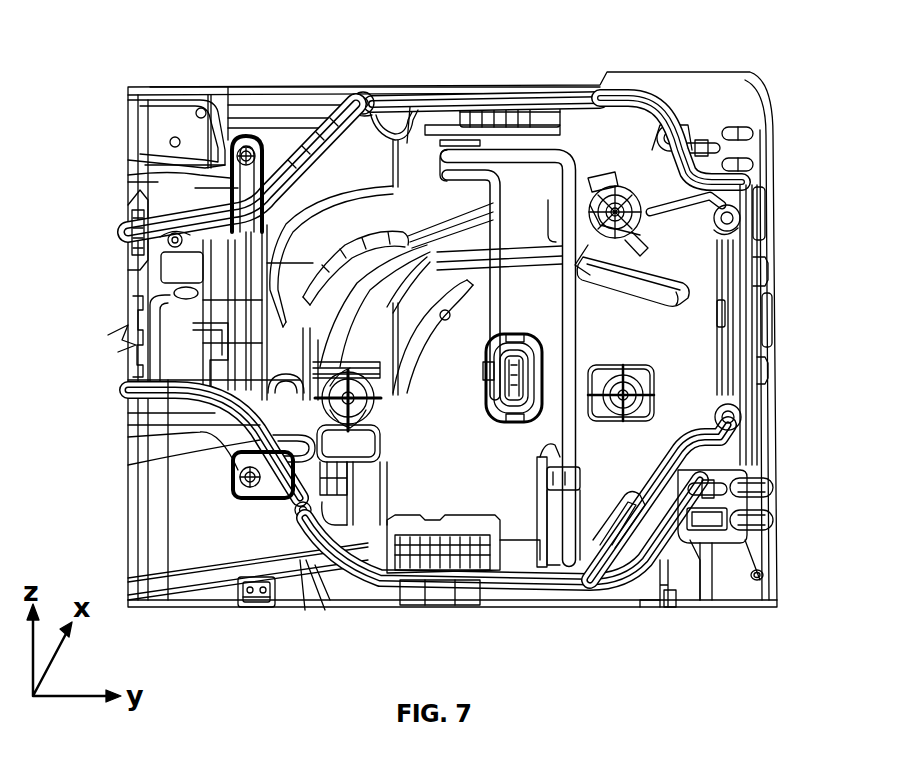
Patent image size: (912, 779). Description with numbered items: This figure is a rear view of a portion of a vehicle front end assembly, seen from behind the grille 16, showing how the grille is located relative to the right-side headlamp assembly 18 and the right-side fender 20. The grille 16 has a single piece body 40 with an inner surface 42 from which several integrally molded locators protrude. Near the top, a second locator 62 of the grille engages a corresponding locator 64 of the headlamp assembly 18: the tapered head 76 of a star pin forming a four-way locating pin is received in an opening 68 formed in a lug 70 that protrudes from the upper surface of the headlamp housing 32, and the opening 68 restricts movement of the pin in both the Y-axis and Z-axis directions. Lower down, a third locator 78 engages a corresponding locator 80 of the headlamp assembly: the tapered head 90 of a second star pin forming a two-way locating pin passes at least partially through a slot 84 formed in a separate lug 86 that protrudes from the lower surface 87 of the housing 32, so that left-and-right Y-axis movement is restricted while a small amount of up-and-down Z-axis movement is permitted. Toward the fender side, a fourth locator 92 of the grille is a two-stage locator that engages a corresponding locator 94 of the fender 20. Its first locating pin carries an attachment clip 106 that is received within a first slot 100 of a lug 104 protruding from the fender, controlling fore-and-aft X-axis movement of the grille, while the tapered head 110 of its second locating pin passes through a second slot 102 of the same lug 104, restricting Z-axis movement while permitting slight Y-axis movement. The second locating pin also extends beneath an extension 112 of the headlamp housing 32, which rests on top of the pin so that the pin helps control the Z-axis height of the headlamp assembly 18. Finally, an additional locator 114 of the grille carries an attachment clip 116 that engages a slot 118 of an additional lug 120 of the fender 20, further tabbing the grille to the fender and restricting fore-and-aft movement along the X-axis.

The grille 16 is at (283, 95).
The headlamp assembly 18 is at (512, 148).
The fender 20 is at (777, 185).
The housing 32 is at (515, 537).
The single piece body 40 is at (347, 92).
The inner surface 42 is at (195, 530).
The second locator 62 is at (251, 155).
The corresponding locator 64 is at (273, 155).
The opening 68 is at (240, 163).
The lug 70 is at (238, 188).
The tapered head 76 is at (243, 146).
The third locator 78 is at (238, 486).
The corresponding locator 80 is at (276, 497).
The slot 84 is at (235, 484).
The lug 86 is at (232, 468).
The lower surface 87 is at (300, 560).
The tapered head 90 is at (235, 472).
The fourth locator 92 is at (717, 473).
The corresponding locator 94 is at (707, 525).
The first slot 100 is at (757, 530).
The second slot 102 is at (762, 578).
The lug 104 is at (732, 475).
The attachment clip 106 is at (695, 485).
The tapered head 110 is at (712, 523).
The extension 112 is at (657, 517).
The additional locator 114 is at (752, 152).
The attachment clip 116 is at (716, 128).
The slot 118 is at (713, 130).
The additional lug 120 is at (707, 140).